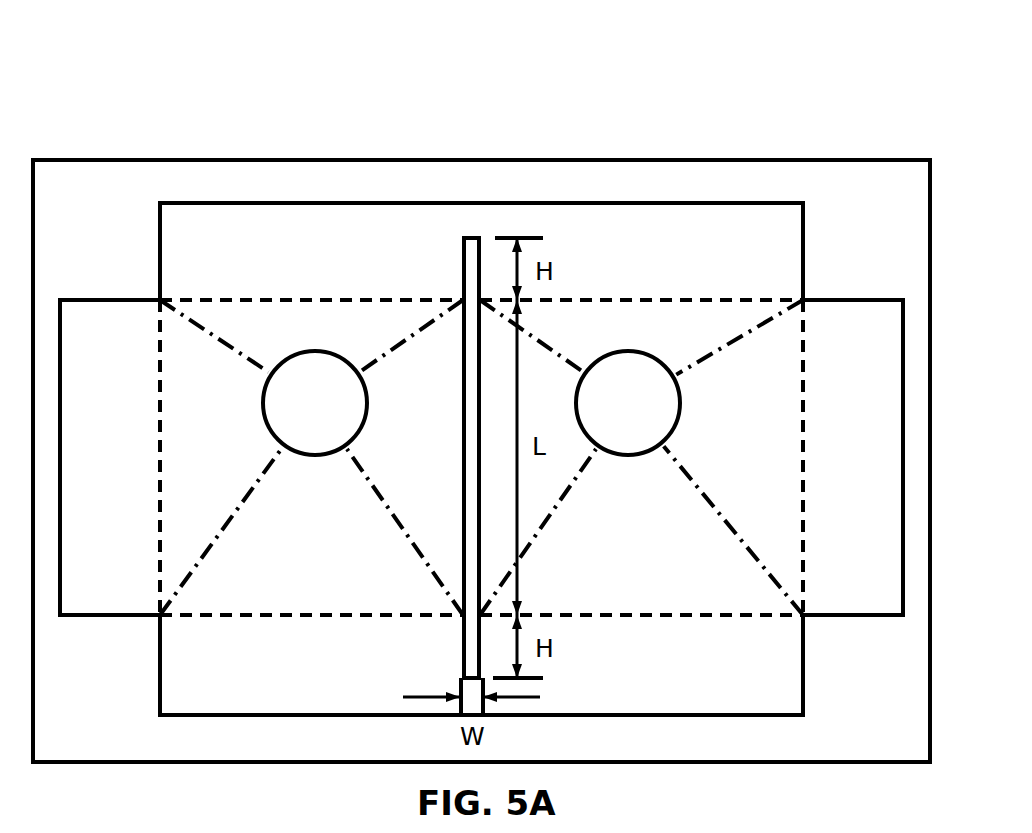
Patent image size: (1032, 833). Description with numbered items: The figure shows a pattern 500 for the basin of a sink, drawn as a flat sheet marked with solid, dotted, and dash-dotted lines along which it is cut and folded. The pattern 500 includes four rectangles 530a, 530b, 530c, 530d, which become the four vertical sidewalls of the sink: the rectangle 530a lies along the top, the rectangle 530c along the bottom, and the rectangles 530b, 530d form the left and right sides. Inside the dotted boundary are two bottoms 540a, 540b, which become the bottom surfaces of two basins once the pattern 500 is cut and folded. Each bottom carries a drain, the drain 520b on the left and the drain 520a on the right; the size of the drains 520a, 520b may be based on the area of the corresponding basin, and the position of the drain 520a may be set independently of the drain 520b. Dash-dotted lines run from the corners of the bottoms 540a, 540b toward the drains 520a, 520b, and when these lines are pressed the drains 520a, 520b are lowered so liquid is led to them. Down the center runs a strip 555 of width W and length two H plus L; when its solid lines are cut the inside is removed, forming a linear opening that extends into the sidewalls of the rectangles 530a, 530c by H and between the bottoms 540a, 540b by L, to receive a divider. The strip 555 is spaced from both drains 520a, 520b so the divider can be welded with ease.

The pattern 500 is at (238, 100).
The strip 555 is at (443, 269).
The rectangle 530a is at (481, 251).
The rectangle 530b is at (110, 457).
The rectangle 530c is at (481, 665).
The rectangle 530d is at (853, 457).
The bottom 540a is at (641, 457).
The bottom 540b is at (311, 457).
The drain 520a is at (628, 403).
The drain 520b is at (315, 403).